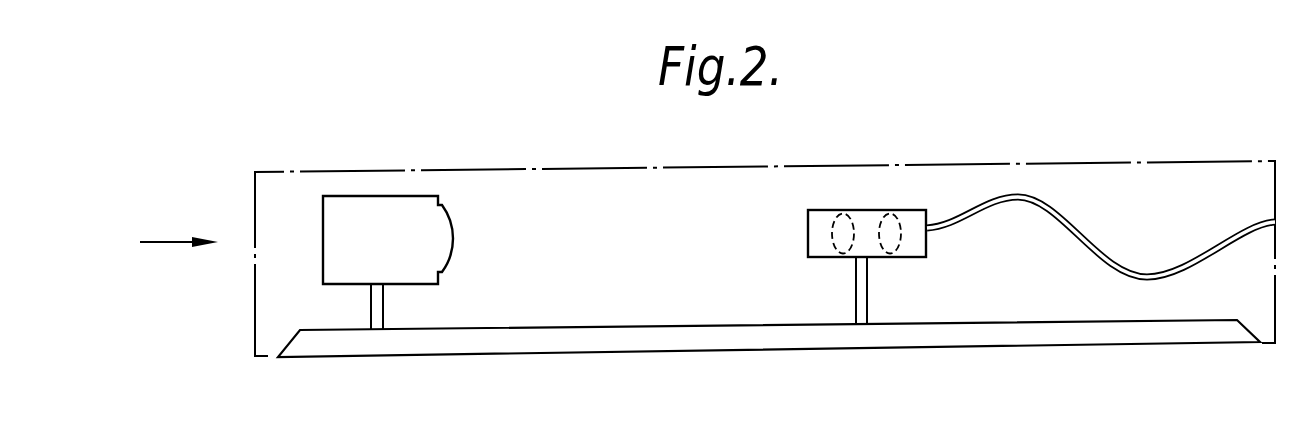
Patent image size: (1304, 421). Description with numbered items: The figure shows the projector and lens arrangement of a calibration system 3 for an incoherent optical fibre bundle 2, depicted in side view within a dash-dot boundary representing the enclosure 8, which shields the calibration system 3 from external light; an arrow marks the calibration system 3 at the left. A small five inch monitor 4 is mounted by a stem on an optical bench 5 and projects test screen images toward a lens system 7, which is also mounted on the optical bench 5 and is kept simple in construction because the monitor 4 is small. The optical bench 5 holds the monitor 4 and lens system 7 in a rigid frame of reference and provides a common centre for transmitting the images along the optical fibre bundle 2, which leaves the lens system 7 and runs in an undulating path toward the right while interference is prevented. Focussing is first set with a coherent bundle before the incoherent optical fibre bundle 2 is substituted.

The incoherent optical fibre bundle 2 is at (1077, 222).
The calibration system 3 is at (162, 246).
The monitor 4 is at (384, 196).
The optical bench 5 is at (653, 340).
The lens system 7 is at (877, 210).
The enclosure 8 is at (583, 167).